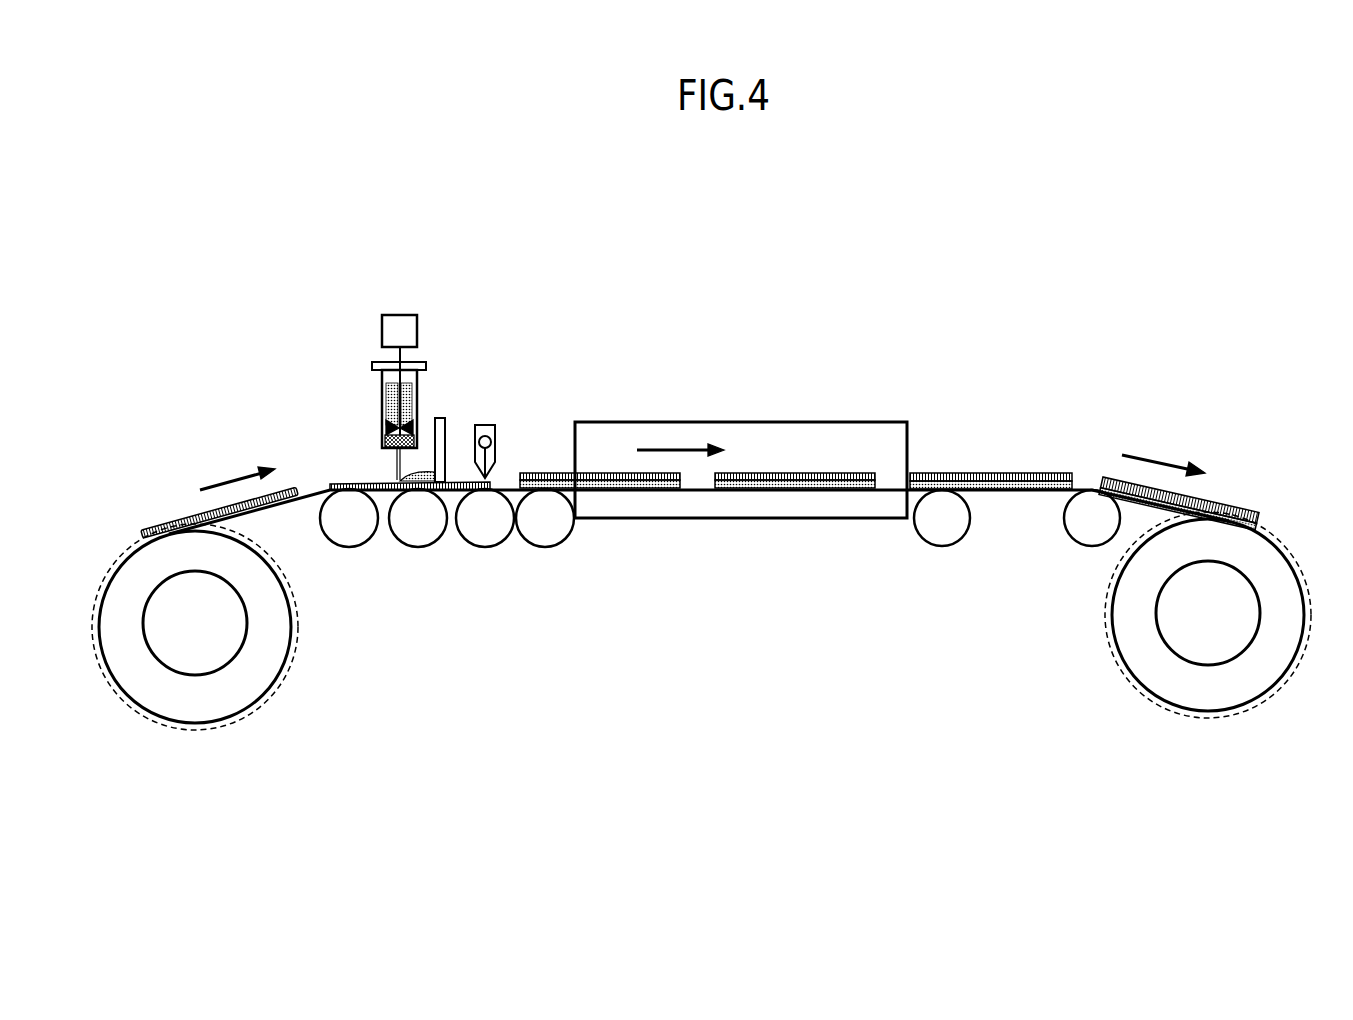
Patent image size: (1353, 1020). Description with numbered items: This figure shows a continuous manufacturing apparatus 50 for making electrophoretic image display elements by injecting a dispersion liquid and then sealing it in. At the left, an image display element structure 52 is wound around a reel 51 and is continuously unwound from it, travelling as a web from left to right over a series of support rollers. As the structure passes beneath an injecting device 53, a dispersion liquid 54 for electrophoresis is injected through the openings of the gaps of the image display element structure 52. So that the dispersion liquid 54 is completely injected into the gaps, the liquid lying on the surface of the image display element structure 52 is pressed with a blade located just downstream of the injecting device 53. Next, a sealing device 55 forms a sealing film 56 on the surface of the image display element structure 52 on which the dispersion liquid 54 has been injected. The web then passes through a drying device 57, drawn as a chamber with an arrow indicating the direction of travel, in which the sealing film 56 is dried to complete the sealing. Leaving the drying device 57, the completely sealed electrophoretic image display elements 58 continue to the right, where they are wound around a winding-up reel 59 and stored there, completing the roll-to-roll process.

The continuous manufacturing apparatus 50 is at (932, 286).
The reel 51 is at (120, 580).
The image display element structure 52 is at (292, 495).
The injecting device 53 is at (458, 382).
The dispersion liquid 54 is at (415, 473).
The sealing device 55 is at (505, 472).
The sealing film 56 is at (560, 468).
The drying device 57 is at (717, 422).
The electrophoretic image display elements 58 is at (972, 473).
The winding-up reel 59 is at (1262, 562).